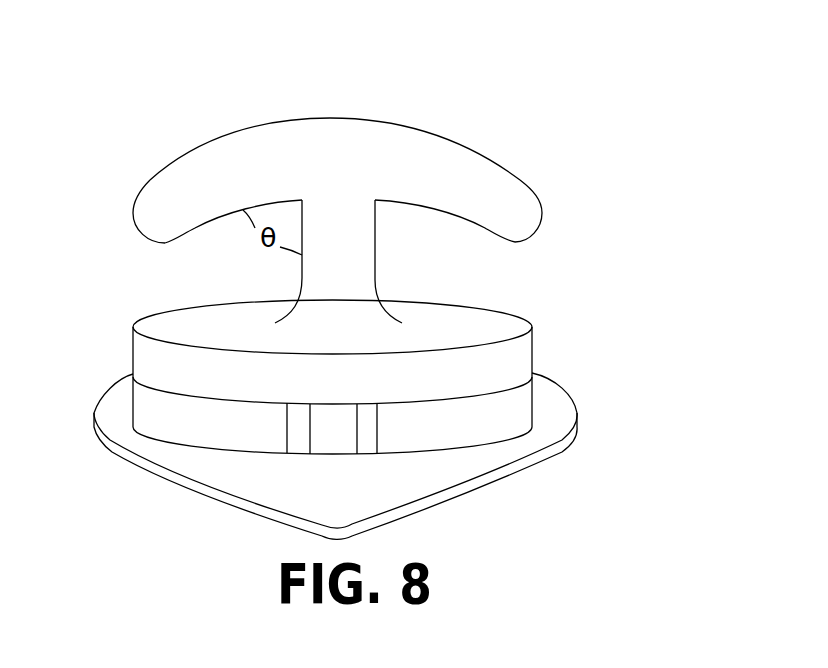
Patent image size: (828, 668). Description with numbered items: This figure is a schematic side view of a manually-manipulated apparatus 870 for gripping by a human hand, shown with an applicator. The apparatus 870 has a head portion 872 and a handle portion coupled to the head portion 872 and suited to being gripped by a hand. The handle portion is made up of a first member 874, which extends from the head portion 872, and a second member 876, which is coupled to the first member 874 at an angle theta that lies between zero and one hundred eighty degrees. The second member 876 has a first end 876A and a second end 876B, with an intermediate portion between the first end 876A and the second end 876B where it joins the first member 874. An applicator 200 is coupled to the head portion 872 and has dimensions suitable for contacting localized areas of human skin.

The apparatus 870 is at (577, 98).
The second member 876 is at (295, 120).
The first end 876A is at (138, 200).
The second end 876B is at (538, 190).
The first member 874 is at (375, 273).
The head portion 872 is at (517, 307).
The applicator 200 is at (557, 408).